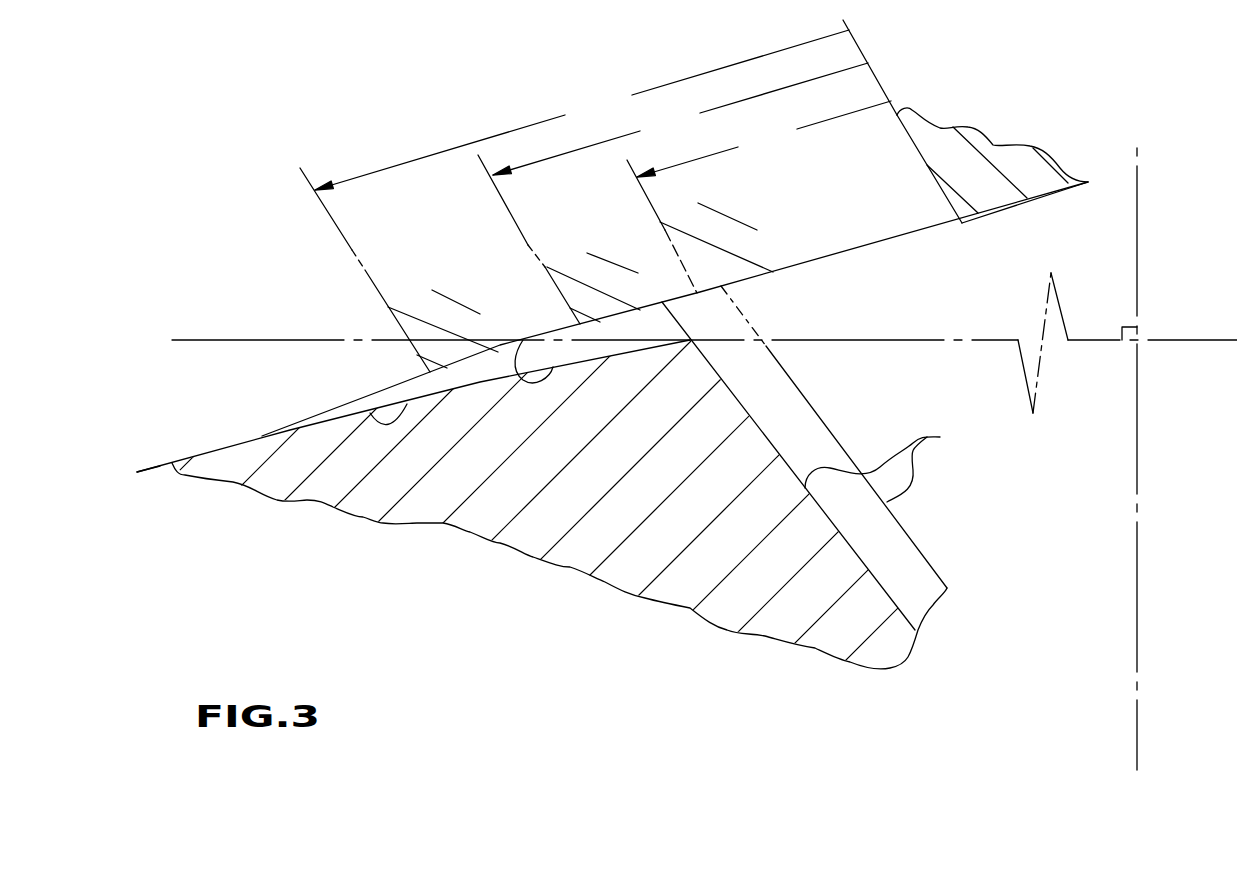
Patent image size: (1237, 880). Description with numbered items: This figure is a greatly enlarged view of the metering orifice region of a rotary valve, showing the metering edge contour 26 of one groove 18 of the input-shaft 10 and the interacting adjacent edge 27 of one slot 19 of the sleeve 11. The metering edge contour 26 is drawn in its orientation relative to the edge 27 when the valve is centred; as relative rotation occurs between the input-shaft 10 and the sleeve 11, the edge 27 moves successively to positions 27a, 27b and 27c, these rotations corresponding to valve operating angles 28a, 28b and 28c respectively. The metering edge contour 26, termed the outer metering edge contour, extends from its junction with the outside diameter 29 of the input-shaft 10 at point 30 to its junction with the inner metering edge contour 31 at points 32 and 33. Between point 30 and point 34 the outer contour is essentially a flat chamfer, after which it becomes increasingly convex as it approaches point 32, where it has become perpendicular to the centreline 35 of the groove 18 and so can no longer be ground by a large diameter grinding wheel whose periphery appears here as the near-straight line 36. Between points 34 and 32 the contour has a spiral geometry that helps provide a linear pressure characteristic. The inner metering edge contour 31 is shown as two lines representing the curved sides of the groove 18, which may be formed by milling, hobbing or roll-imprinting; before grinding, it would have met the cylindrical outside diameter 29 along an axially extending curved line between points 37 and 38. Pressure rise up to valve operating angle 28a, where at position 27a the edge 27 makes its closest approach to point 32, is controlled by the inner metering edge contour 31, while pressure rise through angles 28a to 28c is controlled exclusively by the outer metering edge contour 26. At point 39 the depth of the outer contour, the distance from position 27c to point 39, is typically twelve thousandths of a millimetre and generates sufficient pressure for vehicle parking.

The input-shaft 10 is at (763, 625).
The sleeve 11 is at (995, 157).
The groove 18 is at (985, 505).
The slot 19 is at (903, 182).
The outer metering edge contour 26 is at (577, 362).
The edge 27 is at (960, 223).
The position 27a is at (697, 296).
The position 27b is at (578, 327).
The position 27c is at (430, 377).
The valve operating angle 28a is at (759, 197).
The valve operating angle 28b is at (673, 193).
The valve operating angle 28c is at (574, 201).
The outside diameter 29 is at (157, 468).
The point 30 is at (233, 445).
The inner metering edge contour 31 is at (850, 437).
The point 32 is at (600, 345).
The point 33 is at (762, 353).
The point 34 is at (523, 340).
The centreline 35 is at (1137, 625).
The near-straight line 36 is at (230, 338).
The point 37 is at (673, 305).
The point 38 is at (727, 282).
The point 39 is at (372, 412).